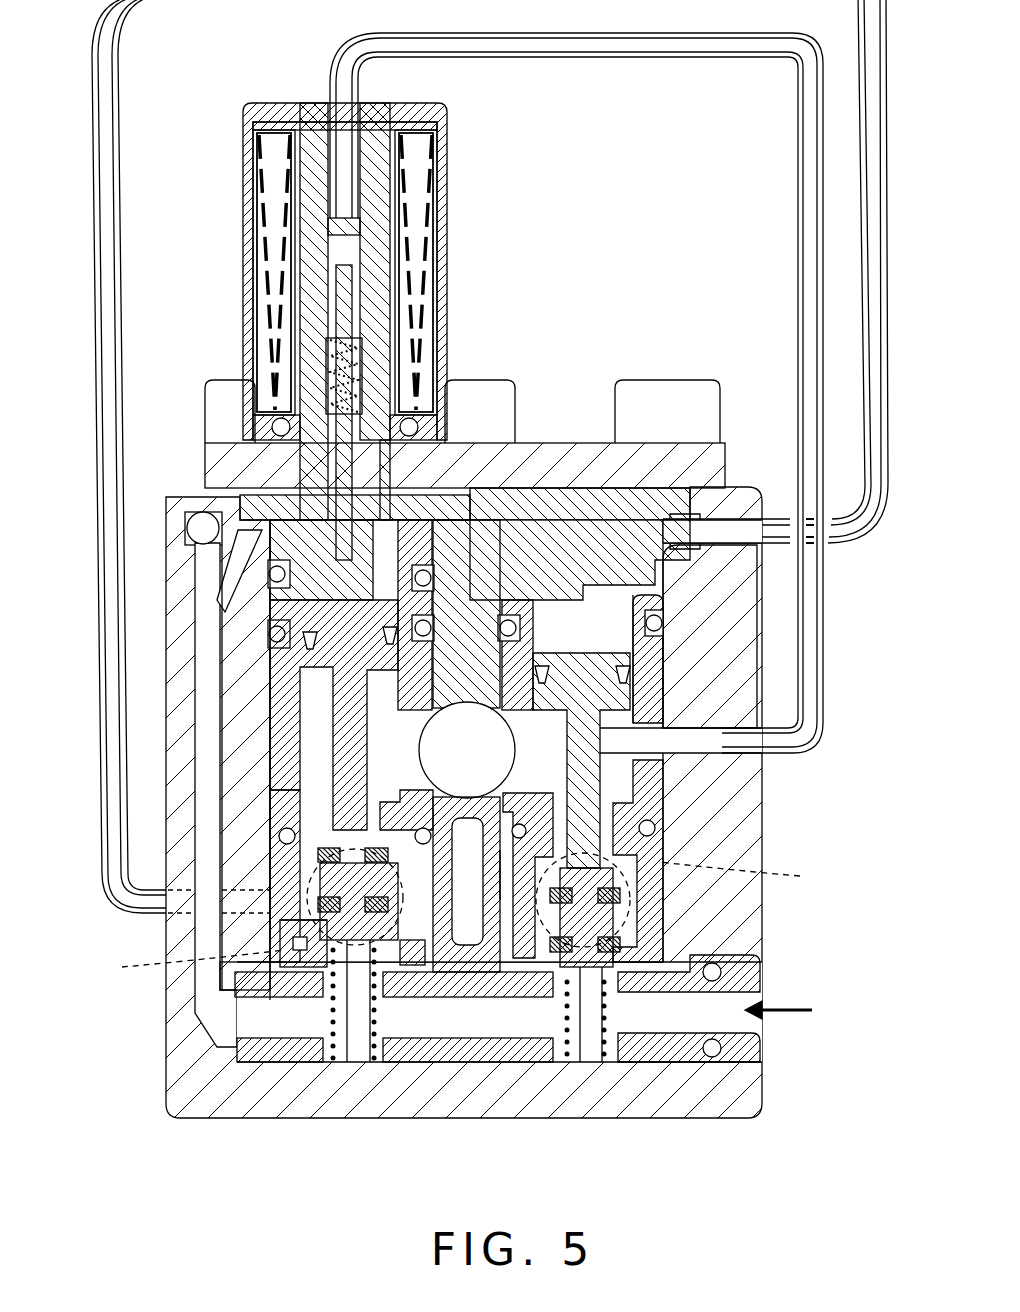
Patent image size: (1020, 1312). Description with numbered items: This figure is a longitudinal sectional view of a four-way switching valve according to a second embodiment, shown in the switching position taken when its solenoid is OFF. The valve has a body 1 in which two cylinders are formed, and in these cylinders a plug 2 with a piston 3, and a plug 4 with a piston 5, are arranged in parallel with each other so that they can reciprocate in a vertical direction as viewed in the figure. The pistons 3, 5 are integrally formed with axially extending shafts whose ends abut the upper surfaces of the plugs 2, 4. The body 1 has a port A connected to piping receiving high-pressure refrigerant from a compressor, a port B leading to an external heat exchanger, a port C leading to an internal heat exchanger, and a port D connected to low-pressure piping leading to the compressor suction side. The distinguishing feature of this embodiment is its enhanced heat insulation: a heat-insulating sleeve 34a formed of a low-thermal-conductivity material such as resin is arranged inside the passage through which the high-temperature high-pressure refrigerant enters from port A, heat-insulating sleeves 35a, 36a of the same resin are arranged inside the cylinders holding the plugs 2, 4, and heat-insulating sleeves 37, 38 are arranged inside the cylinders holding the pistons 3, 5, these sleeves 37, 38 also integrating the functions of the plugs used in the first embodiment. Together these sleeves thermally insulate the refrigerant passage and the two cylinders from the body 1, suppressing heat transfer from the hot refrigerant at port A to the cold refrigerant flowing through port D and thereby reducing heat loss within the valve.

The body 1 is at (762, 834).
The plug 2 is at (360, 1062).
The piston 3 is at (300, 657).
The plug 4 is at (585, 967).
The piston 5 is at (620, 697).
The heat-insulating sleeve 37 is at (275, 765).
The heat-insulating sleeve 38 is at (648, 790).
The heat-insulating sleeve 34a is at (692, 1057).
The heat-insulating sleeve 35a is at (295, 940).
The heat-insulating sleeve 36a is at (496, 915).